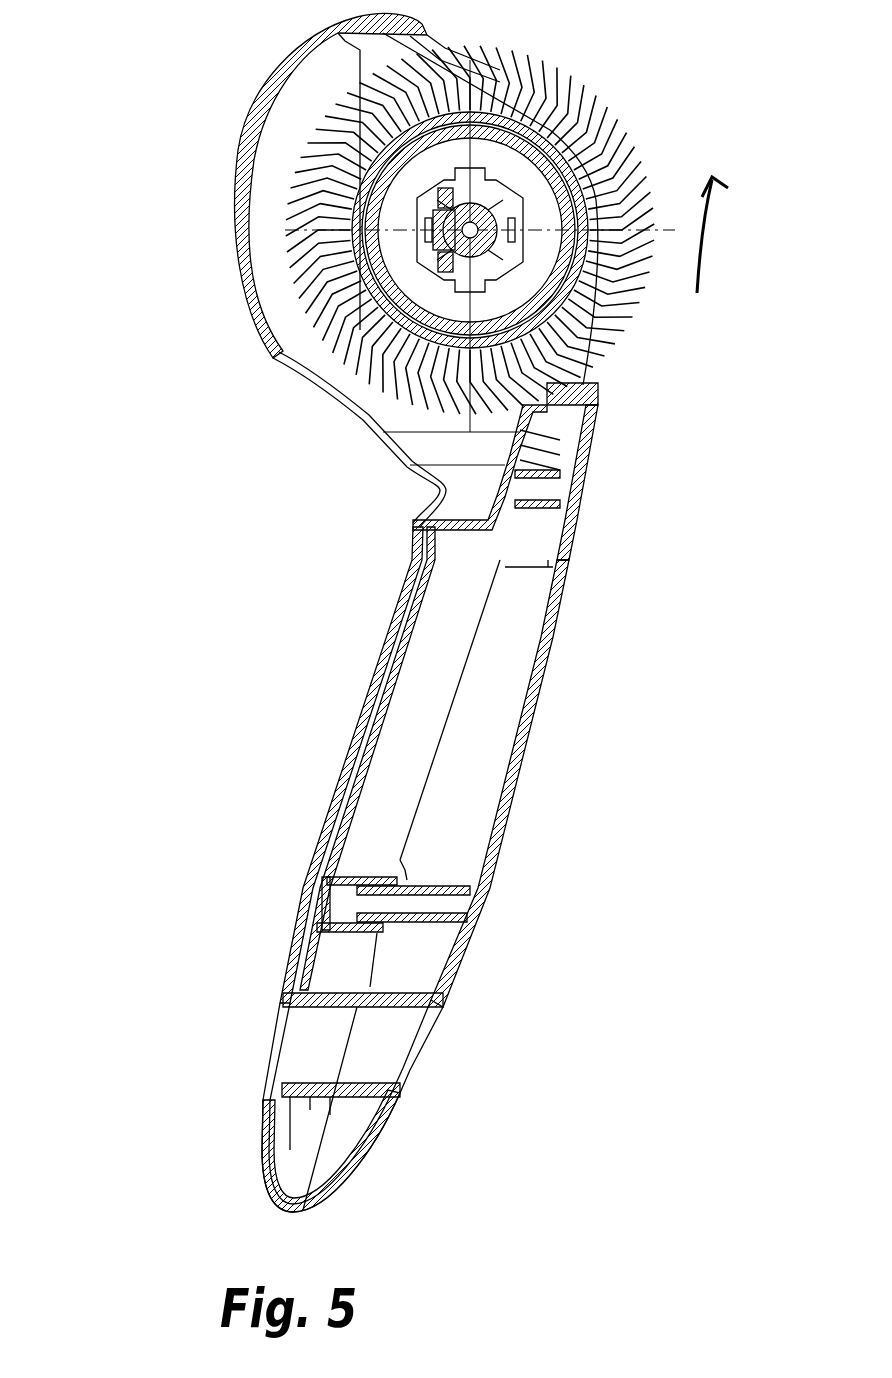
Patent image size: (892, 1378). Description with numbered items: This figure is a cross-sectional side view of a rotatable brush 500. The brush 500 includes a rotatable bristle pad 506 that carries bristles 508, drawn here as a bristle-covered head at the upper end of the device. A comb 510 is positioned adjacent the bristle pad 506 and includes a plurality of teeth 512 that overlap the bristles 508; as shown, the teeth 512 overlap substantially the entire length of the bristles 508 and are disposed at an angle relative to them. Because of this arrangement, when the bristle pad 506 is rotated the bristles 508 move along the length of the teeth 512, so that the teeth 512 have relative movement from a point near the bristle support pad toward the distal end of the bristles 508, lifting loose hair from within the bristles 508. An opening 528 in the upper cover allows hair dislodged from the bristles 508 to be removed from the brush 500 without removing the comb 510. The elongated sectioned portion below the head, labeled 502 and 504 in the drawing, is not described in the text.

The brush 500 is at (180, 125).
The handle housing 502 is at (518, 775).
The end cap 504 is at (397, 1052).
The rotatable bristle pad 506 is at (537, 135).
The bristles 508 is at (617, 122).
The comb 510 is at (580, 427).
The teeth 512 is at (500, 410).
The opening 528 is at (332, 395).